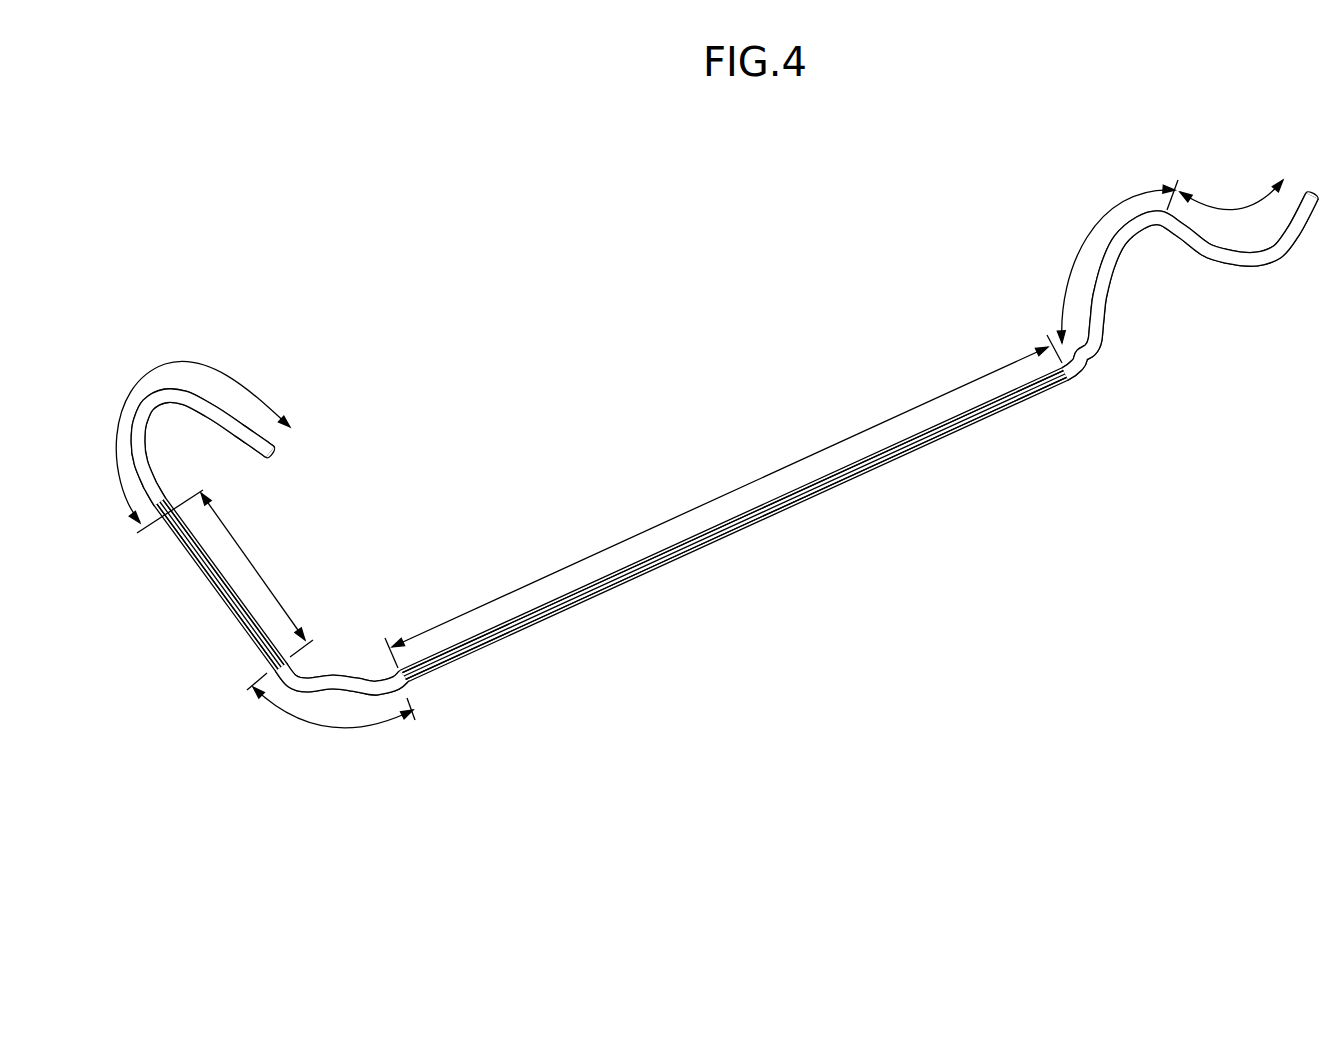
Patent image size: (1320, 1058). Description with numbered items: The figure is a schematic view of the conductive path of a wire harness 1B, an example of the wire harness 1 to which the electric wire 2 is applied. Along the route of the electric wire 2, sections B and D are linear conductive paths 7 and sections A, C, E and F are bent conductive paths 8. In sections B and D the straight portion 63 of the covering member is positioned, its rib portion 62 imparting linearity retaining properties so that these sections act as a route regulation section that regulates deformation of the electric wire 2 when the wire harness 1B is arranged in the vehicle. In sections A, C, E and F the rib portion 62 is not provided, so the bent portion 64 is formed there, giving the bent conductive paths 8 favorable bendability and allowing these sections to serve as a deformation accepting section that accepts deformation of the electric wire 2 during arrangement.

The wire harness 1B is at (515, 378).
The wire harness 1 is at (715, 469).
The electric wire 2 is at (885, 390).
The linear conductive path 7 is at (589, 538).
The bent conductive path 8 is at (728, 439).
The rib portion 62 is at (237, 623).
The straight portion 63 is at (187, 547).
The bent portion 64 is at (152, 402).